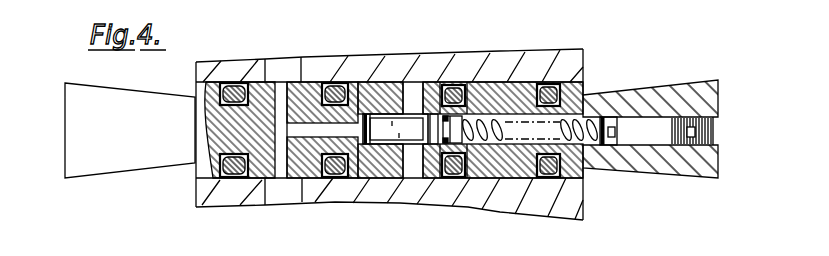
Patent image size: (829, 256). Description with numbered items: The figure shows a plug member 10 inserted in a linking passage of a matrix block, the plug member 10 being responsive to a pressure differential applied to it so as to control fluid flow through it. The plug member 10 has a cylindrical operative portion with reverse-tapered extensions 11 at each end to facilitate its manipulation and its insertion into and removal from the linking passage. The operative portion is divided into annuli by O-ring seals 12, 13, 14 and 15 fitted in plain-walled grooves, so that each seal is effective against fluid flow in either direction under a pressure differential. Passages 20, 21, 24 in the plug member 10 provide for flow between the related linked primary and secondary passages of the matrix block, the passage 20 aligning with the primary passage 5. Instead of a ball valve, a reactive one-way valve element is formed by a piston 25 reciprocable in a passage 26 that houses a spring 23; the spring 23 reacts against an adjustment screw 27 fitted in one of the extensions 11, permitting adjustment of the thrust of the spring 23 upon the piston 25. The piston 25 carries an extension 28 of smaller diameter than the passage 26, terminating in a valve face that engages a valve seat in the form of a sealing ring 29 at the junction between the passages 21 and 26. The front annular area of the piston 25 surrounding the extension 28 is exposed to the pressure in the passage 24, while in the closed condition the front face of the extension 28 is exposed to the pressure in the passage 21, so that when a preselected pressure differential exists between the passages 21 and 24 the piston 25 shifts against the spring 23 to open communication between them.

The primary passage 5 is at (273, 67).
The plug member 10 is at (642, 92).
The reverse-tapered extension 11 is at (145, 98).
The O-ring seal 12 is at (233, 83).
The O-ring seal 13 is at (340, 180).
The O-ring seal 14 is at (456, 180).
The O-ring seal 15 is at (550, 82).
The passage 20 is at (282, 179).
The passage 21 is at (300, 128).
The spring 23 is at (512, 130).
The passage 24 is at (415, 88).
The piston 25 is at (433, 147).
The passage 26 is at (487, 118).
The adjustment screw 27 is at (635, 137).
The extension 28 is at (393, 146).
The sealing ring 29 is at (365, 115).